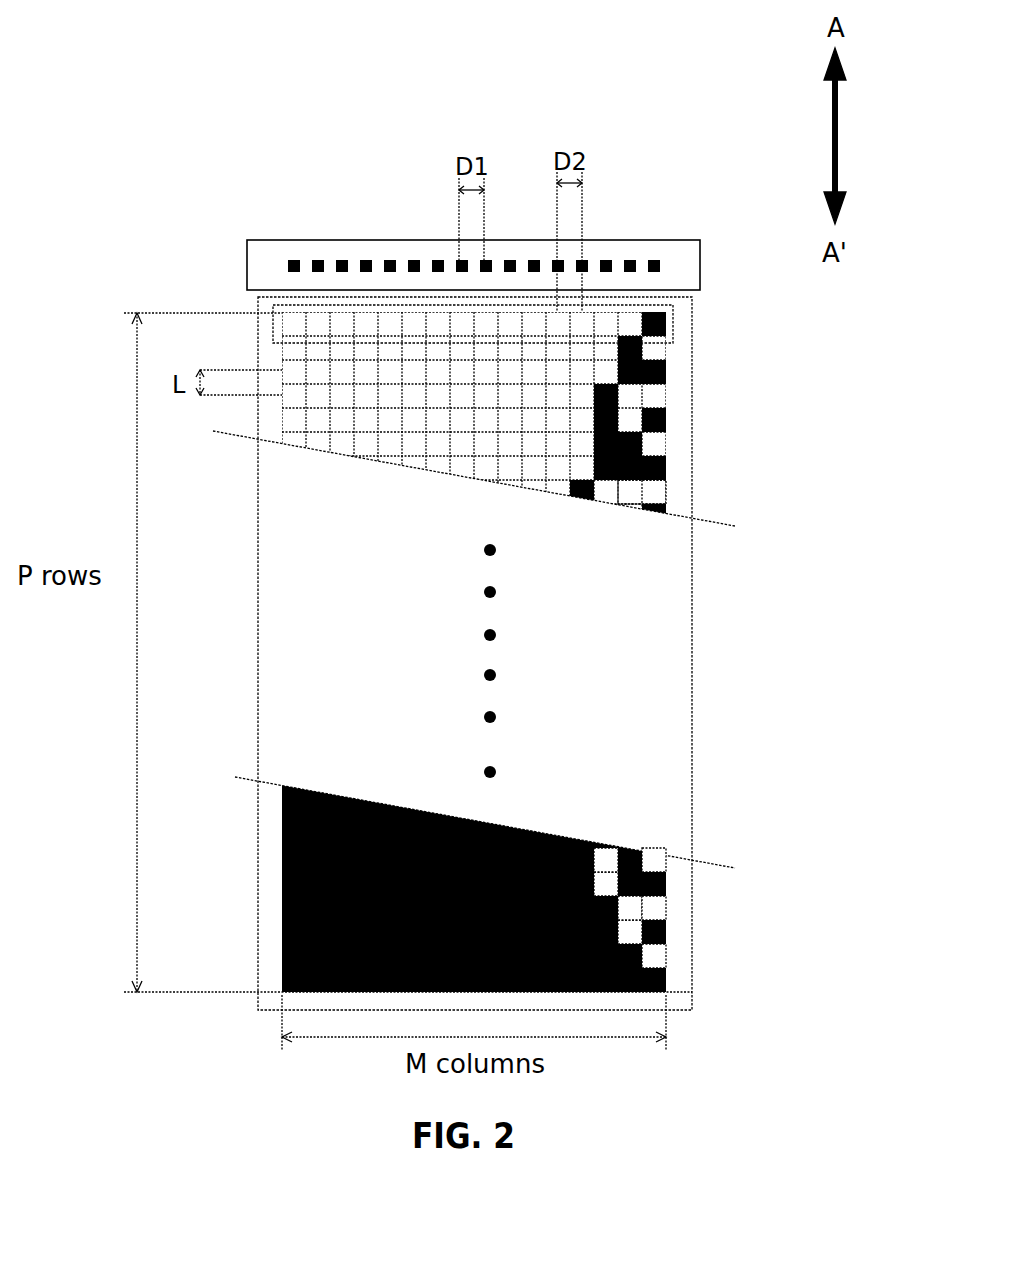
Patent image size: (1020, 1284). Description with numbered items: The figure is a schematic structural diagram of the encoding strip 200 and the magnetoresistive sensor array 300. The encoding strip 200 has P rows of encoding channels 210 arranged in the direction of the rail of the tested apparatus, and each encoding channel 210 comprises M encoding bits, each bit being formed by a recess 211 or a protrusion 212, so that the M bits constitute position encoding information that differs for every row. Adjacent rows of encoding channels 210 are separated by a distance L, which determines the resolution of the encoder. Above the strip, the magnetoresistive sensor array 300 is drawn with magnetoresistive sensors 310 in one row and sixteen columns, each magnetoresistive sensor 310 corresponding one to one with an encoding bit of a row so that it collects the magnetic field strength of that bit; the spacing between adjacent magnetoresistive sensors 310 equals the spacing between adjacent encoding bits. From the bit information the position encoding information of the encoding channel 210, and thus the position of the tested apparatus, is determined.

The encoding strip 200 is at (692, 667).
The encoding channel 210 is at (673, 325).
The recess 211 is at (655, 492).
The protrusion 212 is at (666, 420).
The magnetoresistive sensor array 300 is at (390, 193).
The magnetoresistive sensor 310 is at (365, 260).